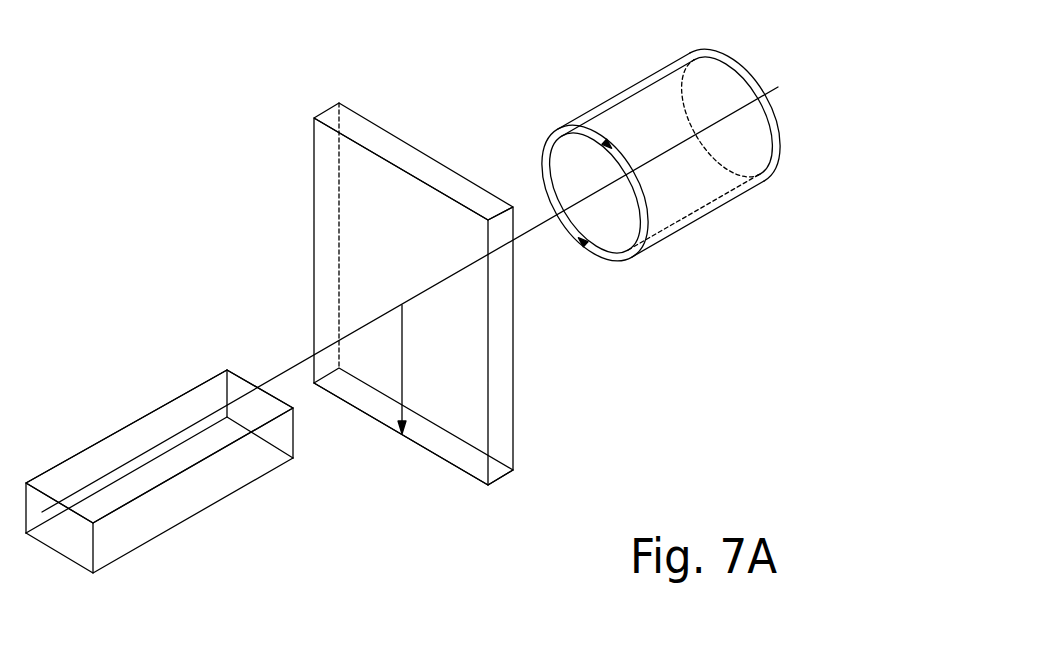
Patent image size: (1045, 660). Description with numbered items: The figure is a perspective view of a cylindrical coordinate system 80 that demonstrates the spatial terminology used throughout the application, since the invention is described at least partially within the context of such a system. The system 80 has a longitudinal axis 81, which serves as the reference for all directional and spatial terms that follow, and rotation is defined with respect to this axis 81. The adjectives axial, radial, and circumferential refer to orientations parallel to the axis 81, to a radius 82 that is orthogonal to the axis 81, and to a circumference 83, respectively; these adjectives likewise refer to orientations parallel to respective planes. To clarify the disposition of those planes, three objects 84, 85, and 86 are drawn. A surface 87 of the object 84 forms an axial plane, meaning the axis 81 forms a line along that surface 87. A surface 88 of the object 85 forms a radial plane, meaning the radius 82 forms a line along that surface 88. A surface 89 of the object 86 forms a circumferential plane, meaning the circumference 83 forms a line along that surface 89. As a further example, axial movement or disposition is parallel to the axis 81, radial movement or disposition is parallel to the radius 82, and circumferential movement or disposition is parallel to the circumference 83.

The cylindrical coordinate system 80 is at (263, 160).
The longitudinal axis 81 is at (760, 100).
The radius 82 is at (402, 362).
The circumference 83 is at (542, 150).
The object 84 is at (120, 558).
The object 85 is at (530, 480).
The object 86 is at (696, 232).
The surface 87 is at (116, 450).
The surface 88 is at (330, 247).
The surface 89 is at (627, 86).